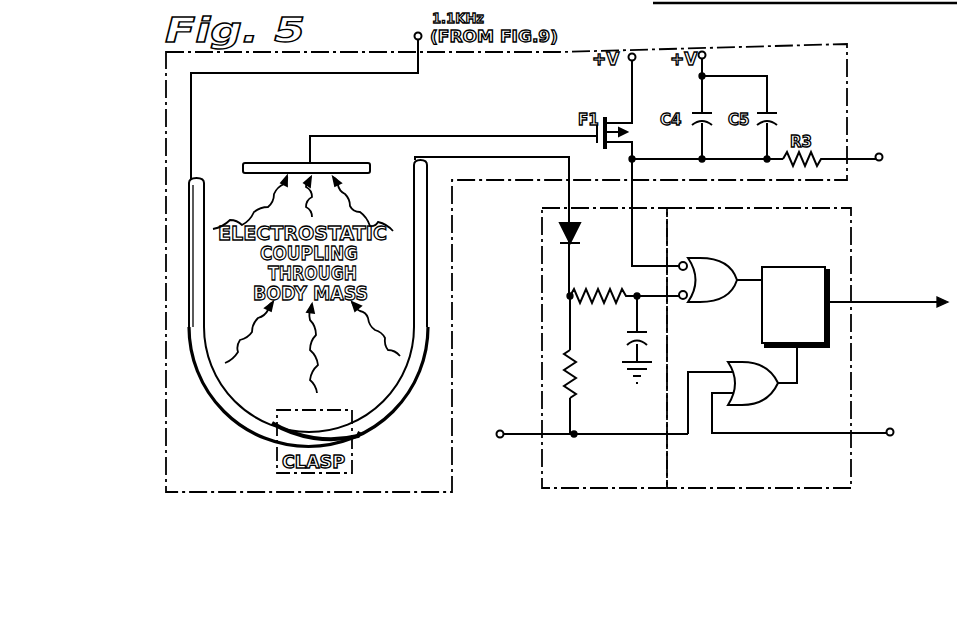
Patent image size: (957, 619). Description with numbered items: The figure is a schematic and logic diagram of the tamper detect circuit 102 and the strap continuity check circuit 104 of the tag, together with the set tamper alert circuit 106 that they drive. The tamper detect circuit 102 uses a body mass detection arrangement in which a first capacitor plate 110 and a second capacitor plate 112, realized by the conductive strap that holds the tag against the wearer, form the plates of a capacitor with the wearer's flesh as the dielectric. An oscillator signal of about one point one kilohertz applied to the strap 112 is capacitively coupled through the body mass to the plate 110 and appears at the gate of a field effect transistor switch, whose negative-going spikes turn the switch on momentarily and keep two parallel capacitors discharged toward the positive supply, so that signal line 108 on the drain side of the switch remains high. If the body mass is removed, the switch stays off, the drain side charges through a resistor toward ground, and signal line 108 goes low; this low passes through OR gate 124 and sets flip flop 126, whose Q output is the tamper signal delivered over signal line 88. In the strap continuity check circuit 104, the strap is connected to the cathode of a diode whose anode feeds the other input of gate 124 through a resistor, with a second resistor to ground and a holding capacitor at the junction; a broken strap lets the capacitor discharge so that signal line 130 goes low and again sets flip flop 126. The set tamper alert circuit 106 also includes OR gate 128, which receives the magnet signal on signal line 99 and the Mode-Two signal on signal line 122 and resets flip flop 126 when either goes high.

The signal line 88 is at (879, 302).
The signal line 99 is at (876, 432).
The tamper detect circuit 102 is at (848, 90).
The strap continuity check circuit 104 is at (540, 228).
The set tamper alert circuit 106 is at (856, 371).
The signal line 108 is at (638, 206).
The first capacitor plate 110 is at (263, 163).
The second capacitor plate 112 is at (236, 418).
The signal line 122 is at (878, 161).
The OR gate 124 is at (716, 243).
The flip flop 126 is at (819, 243).
The OR gate 128 is at (763, 396).
The signal line 130 is at (652, 296).